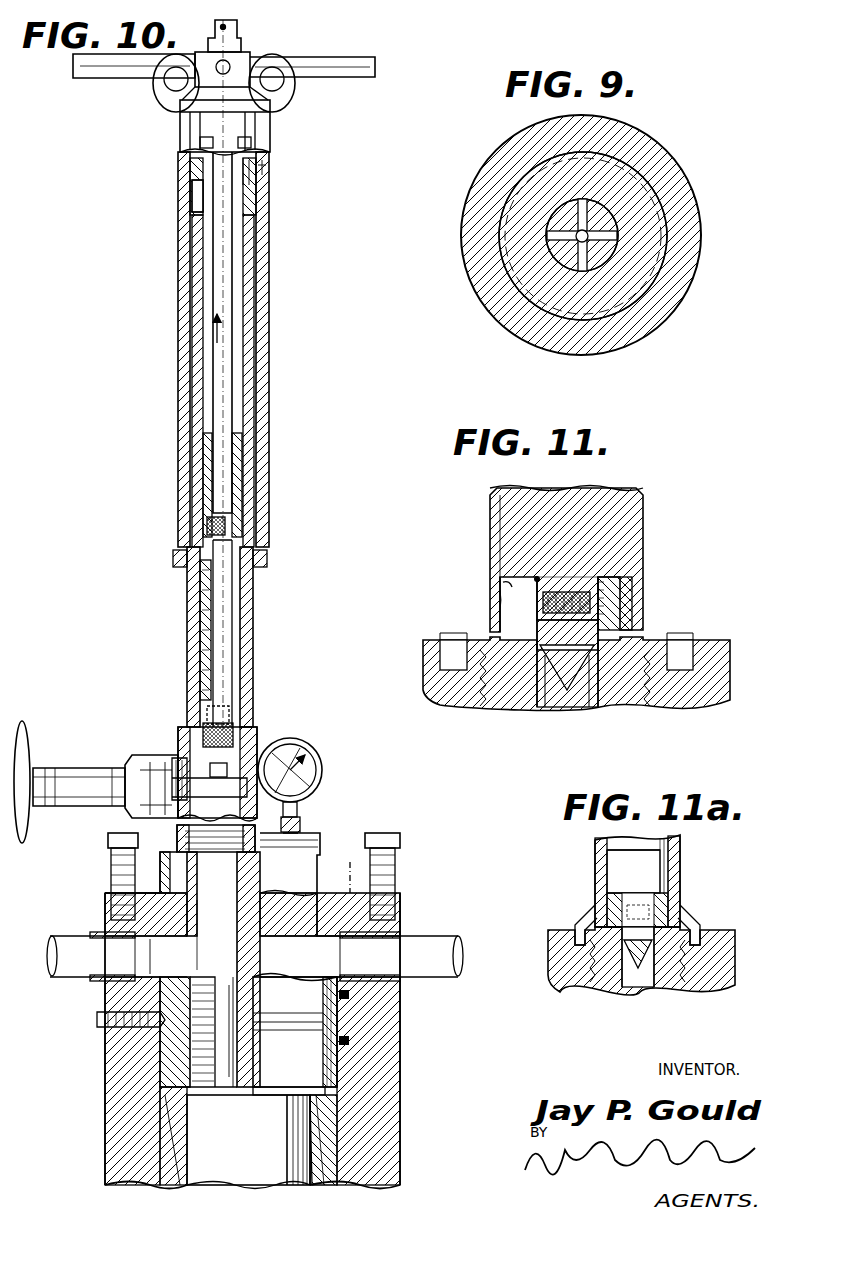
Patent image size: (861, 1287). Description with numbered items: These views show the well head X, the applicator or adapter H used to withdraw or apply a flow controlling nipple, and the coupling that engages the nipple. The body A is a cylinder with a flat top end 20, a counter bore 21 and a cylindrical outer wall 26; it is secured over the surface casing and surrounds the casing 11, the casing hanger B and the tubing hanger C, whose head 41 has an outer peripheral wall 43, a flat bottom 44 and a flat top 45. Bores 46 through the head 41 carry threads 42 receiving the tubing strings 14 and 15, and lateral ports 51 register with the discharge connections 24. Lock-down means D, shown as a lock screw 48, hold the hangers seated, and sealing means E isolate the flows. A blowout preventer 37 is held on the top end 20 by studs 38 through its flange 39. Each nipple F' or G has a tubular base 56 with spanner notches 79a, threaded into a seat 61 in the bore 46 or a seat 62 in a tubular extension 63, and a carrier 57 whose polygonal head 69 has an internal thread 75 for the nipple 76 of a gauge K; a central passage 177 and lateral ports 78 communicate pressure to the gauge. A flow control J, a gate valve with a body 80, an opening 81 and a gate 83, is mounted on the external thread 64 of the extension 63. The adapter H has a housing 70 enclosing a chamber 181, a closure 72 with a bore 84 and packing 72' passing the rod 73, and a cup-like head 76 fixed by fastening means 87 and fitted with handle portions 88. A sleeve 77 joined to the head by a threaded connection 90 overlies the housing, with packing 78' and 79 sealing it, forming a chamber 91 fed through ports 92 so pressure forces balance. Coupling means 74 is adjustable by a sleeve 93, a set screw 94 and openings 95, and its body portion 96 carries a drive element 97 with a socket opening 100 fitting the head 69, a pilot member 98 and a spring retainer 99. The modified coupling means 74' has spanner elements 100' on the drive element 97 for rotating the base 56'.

In FIG. 10, the fastening means 87 is at (242, 40).
In FIG. 10, the head 76 is at (252, 60).
In FIG. 10, the handle portions 88 is at (348, 62).
In FIG. 10, the packing means 79 is at (265, 168).
In FIG. 10, the threaded connection 90 is at (266, 185).
In FIG. 10, the sealing or packing means 72' is at (172, 186).
In FIG. 10, the central bore 84 is at (207, 195).
In FIG. 10, the closure 72 is at (282, 186).
In FIG. 10, the ports 92 is at (195, 230).
In FIG. 10, the chamber 91 is at (250, 252).
In FIG. 10, the sleeve 77 is at (186, 273).
In FIG. 10, the applicator or adapter H is at (278, 327).
In FIG. 11, the applicator or adapter H is at (654, 507).
In FIG. 10, the elongate chamber 181 is at (205, 335).
In FIG. 10, the rod 73 is at (220, 375).
In FIG. 10, the housing 70 is at (250, 399).
In FIG. 10, the packing means 78' is at (259, 485).
In FIG. 10, the set screw 94 is at (225, 520).
In FIG. 10, the openings 95 is at (195, 605).
In FIG. 10, the sleeve 93 is at (240, 595).
In FIG. 10, the body portion 96 is at (207, 692).
In FIG. 11, the body portion 96 is at (607, 500).
In FIG. 10, the coupling means 74 is at (260, 633).
In FIG. 11, the coupling means 74 is at (529, 559).
In FIG. 10, the nipple F' is at (252, 736).
In FIG. 11, the nipple F' is at (661, 630).
In FIG. 10, the valve body 80 is at (152, 757).
In FIG. 10, the base 56 is at (198, 772).
In FIG. 9, the base 56 is at (545, 236).
In FIG. 11, the base 56 is at (549, 674).
In FIG. 10, the gate 83 is at (203, 787).
In FIG. 10, the gauge K is at (324, 762).
In FIG. 10, the flow control J is at (98, 808).
In FIG. 10, the opening 81 is at (180, 833).
In FIG. 10, the head 69 is at (300, 822).
In FIG. 11, the head 69 is at (622, 590).
In FIG. 11A, the head 69 is at (672, 905).
In FIG. 10, the nipple G is at (302, 830).
In FIG. 10, the threaded seat 62 is at (283, 830).
In FIG. 10, the tubular extension 63 is at (188, 884).
In FIG. 9, the tubular extension 63 is at (475, 260).
In FIG. 10, the blowout preventer 37 is at (350, 862).
In FIG. 10, the studs 38 is at (397, 848).
In FIG. 10, the external thread 64 is at (290, 855).
In FIG. 10, the top 45 is at (318, 915).
In FIG. 10, the top end 20 is at (392, 910).
In FIG. 10, the well head X is at (403, 913).
In FIG. 10, the flange 39 is at (108, 878).
In FIG. 10, the tubing or discharge connections 24 is at (70, 947).
In FIG. 10, the bore 46 is at (235, 945).
In FIG. 10, the lateral port 51 is at (190, 962).
In FIG. 10, the lock screw 48 is at (132, 1005).
In FIG. 10, the lock-down means D is at (93, 1017).
In FIG. 10, the sealing means E is at (350, 995).
In FIG. 10, the head 41 is at (183, 1068).
In FIG. 10, the threaded seat 61 is at (236, 1030).
In FIG. 10, the tubing hanger C is at (350, 1040).
In FIG. 10, the outer peripheral wall 43 is at (340, 1082).
In FIG. 10, the flat bottom 44 is at (326, 1090).
In FIG. 10, the casing head or body A is at (103, 1113).
In FIG. 10, the tubing string 14 is at (206, 1093).
In FIG. 10, the tubing receiving means or threads 42 is at (240, 1093).
In FIG. 10, the tubing string 15 is at (278, 1095).
In FIG. 10, the casing hanger B is at (338, 1135).
In FIG. 10, the cylindrical outer wall 26 is at (105, 1160).
In FIG. 10, the casing 11 is at (235, 1138).
In FIG. 10, the counter bore 21 is at (336, 1160).
In FIG. 9, the lateral ports 78 is at (601, 235).
In FIG. 9, the carrier 57 is at (612, 252).
In FIG. 11, the carrier 57 is at (513, 710).
In FIG. 11A, the carrier 57 is at (598, 990).
In FIG. 9, the central longitudinal flow passage 177 is at (580, 260).
In FIG. 11, the internal thread 75 is at (535, 576).
In FIG. 11, the releasable retainer 99 is at (578, 592).
In FIG. 11, the drive element 97 is at (642, 563).
In FIG. 11A, the drive element 97 is at (675, 870).
In FIG. 11, the socket opening 100 is at (472, 603).
In FIG. 11, the tool engaging notches or recesses 79a is at (447, 645).
In FIG. 11, the pilot member 98 is at (568, 690).
In FIG. 11A, the coupling means 74' is at (598, 881).
In FIG. 11A, the spanner elements 100' is at (638, 924).
In FIG. 11A, the base 56' is at (609, 961).